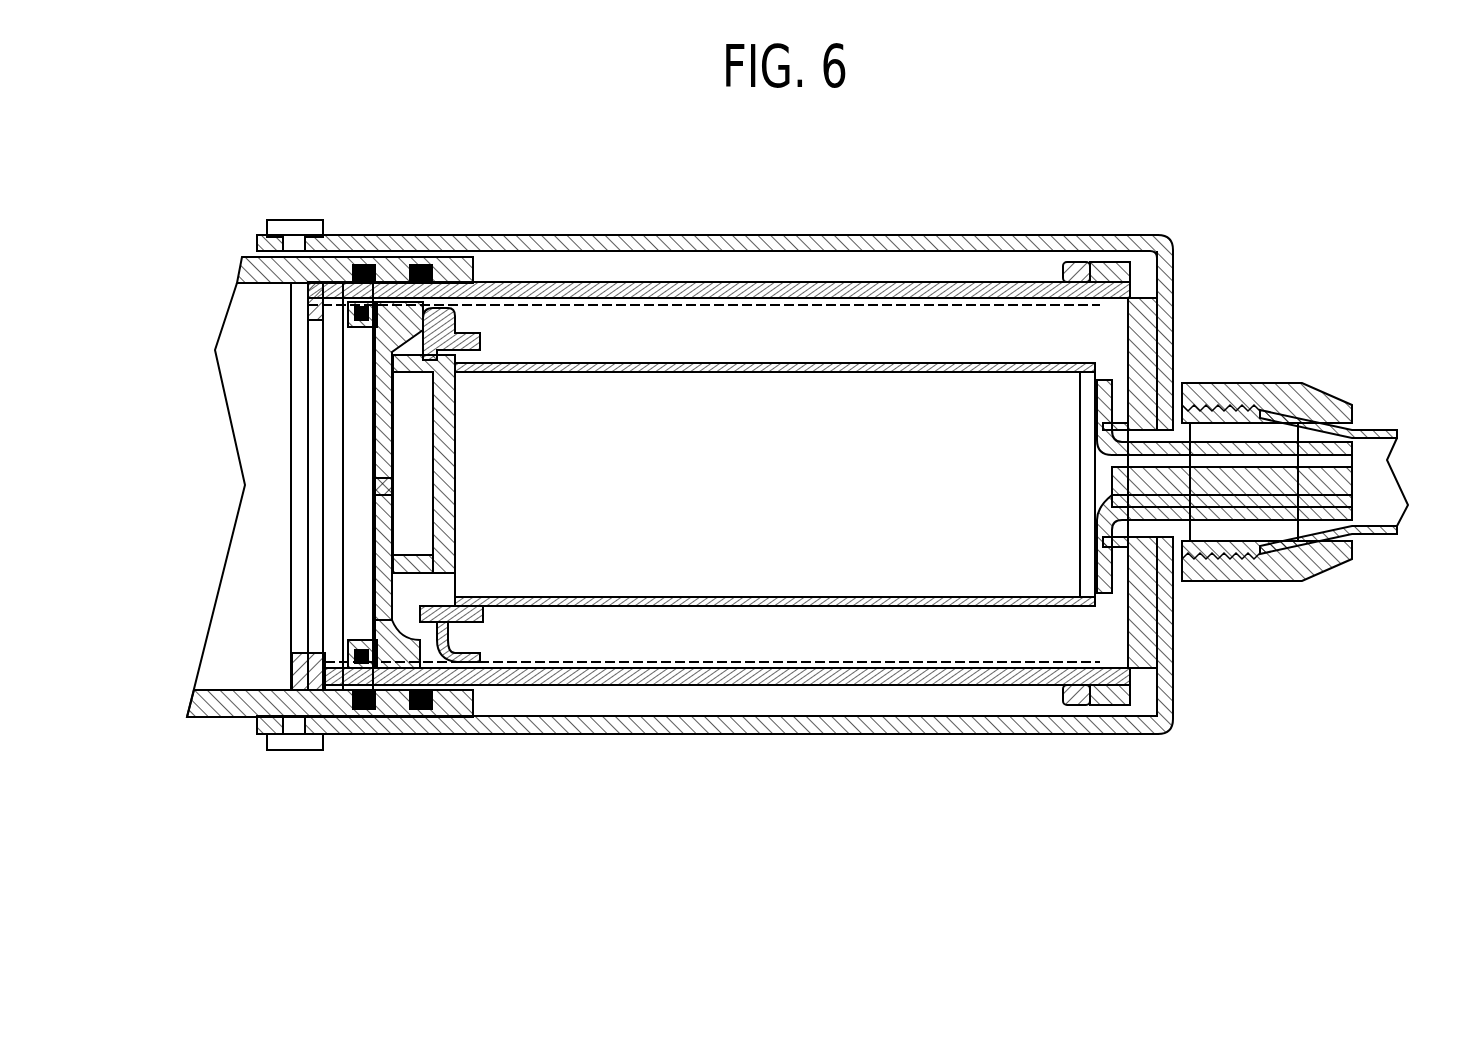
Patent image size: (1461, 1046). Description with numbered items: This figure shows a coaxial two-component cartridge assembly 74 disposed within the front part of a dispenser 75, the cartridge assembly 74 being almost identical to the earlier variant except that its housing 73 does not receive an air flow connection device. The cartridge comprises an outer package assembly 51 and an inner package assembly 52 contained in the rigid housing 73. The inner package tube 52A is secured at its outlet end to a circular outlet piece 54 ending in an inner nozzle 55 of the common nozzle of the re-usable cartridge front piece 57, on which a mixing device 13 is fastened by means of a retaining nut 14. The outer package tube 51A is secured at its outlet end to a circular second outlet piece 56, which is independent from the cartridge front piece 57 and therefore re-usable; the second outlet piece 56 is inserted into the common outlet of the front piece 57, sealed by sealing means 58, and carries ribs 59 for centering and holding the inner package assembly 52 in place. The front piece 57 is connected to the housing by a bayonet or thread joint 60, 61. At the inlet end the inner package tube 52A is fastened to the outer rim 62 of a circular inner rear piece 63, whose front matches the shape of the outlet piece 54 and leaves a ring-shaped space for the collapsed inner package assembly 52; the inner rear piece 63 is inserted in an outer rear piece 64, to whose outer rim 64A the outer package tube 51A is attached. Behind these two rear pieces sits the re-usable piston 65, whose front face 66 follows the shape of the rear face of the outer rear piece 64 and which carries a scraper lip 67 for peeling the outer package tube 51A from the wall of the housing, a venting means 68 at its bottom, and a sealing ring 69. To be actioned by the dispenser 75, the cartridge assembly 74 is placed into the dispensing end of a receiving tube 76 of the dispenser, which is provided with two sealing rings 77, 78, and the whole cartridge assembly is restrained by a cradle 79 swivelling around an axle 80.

The mixing device 13 is at (1385, 540).
The retaining nut 14 is at (1327, 548).
The outer package assembly 51 is at (817, 352).
The outer package tube 51A is at (645, 298).
The inner package assembly 52 is at (817, 505).
The inner package tube 52A is at (682, 598).
The outlet piece 54 is at (1098, 402).
The inner nozzle 55 is at (1245, 455).
The second outlet piece 56 is at (1160, 660).
The cartridge front piece 57 is at (1180, 265).
The sealing means 58 is at (1153, 555).
The ribs 59 is at (1112, 622).
The bayonet or thread joint 60 is at (1080, 265).
The bayonet or thread joint 61 is at (1100, 268).
The outer rim 62 is at (447, 375).
The inner rear piece 63 is at (460, 456).
The outer rear piece 64 is at (447, 530).
The outer rim 64A is at (458, 660).
The piston 65 is at (408, 425).
The front face 66 is at (403, 512).
The scraper lip 67 is at (430, 692).
The venting means 68 is at (362, 482).
The sealing ring 69 is at (372, 310).
The housing 73 is at (782, 672).
The cartridge assembly 74 is at (857, 692).
The dispenser 75 is at (908, 222).
The receiving tube 76 is at (228, 705).
The sealing ring 77 is at (362, 712).
The sealing ring 78 is at (420, 712).
The cradle 79 is at (1000, 735).
The axle 80 is at (322, 222).